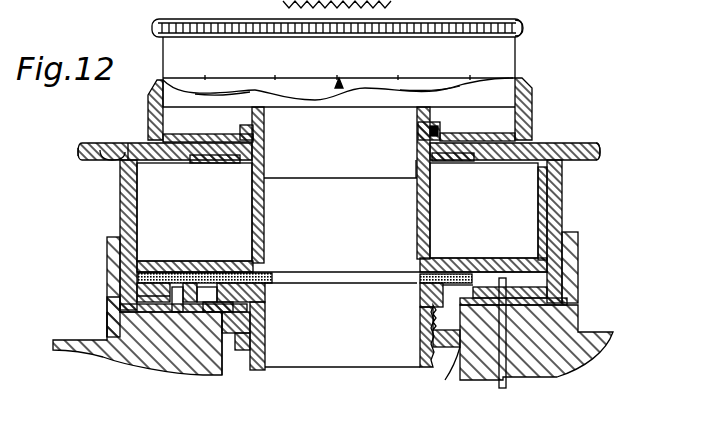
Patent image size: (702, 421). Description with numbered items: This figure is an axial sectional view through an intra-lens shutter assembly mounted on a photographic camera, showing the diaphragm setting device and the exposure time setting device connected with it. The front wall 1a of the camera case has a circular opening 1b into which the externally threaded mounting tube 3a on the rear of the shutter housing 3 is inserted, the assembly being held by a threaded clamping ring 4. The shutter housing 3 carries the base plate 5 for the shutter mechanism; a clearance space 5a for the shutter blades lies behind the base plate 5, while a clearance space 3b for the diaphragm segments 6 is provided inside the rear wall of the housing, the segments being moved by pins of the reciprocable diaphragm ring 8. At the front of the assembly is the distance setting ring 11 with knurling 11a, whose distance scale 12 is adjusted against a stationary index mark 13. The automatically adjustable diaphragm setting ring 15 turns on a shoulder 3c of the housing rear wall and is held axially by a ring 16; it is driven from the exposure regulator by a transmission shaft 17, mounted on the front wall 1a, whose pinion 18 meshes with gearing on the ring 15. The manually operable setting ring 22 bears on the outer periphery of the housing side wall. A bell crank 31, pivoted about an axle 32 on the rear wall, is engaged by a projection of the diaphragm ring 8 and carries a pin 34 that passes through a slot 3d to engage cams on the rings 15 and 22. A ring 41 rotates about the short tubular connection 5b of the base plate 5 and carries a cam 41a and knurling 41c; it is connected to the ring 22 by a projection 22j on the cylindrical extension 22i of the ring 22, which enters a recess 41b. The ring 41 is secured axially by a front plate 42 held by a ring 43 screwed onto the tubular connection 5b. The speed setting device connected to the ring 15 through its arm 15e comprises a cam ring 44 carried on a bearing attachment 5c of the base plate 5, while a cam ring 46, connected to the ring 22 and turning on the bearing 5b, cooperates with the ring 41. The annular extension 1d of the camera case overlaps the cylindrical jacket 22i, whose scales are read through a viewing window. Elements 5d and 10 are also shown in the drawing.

The front wall 1a is at (575, 368).
The circular opening 1b is at (419, 315).
The annular extension 1d is at (574, 254).
The shutter housing 3 is at (563, 228).
The mounting tube 3a is at (425, 355).
The clearance space 3b is at (213, 264).
The shoulder 3c is at (268, 300).
The slot 3d is at (150, 291).
The threaded clamping ring 4 is at (440, 350).
The base plate 5 is at (470, 260).
The clearance space 5a is at (494, 258).
The short tubular connection 5b is at (431, 208).
The bearing attachment 5c is at (416, 170).
The spindle top portion 5d is at (416, 158).
The diaphragm segments 6 is at (270, 273).
The diaphragm ring 8 is at (446, 262).
The spring 10 is at (243, 262).
The distance setting ring 11 is at (498, 18).
The knurling 11a is at (524, 26).
The distance scale 12 is at (486, 62).
The index mark 13 is at (344, 87).
The diaphragm setting ring 15 is at (186, 358).
The arm 15e is at (549, 218).
The ring 16 is at (218, 362).
The transmission shaft 17 is at (508, 392).
The pinion 18 is at (462, 355).
The manually operable setting ring 22 is at (570, 306).
The extension 22i is at (562, 192).
The projection 22j is at (128, 142).
The bell crank 31 is at (198, 265).
The axle 32 is at (178, 270).
The pin 34 is at (150, 355).
The ring 41 is at (582, 142).
The cam 41a is at (165, 161).
The recess 41b is at (118, 152).
The knurling 41c is at (601, 152).
The front plate 42 is at (533, 98).
The ring 43 is at (442, 128).
The cam ring 44 is at (486, 162).
The cam ring 46 is at (208, 164).